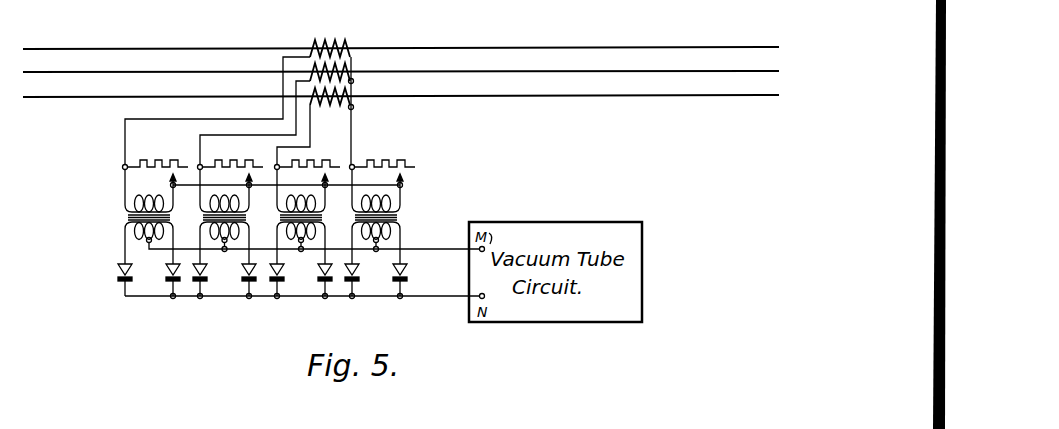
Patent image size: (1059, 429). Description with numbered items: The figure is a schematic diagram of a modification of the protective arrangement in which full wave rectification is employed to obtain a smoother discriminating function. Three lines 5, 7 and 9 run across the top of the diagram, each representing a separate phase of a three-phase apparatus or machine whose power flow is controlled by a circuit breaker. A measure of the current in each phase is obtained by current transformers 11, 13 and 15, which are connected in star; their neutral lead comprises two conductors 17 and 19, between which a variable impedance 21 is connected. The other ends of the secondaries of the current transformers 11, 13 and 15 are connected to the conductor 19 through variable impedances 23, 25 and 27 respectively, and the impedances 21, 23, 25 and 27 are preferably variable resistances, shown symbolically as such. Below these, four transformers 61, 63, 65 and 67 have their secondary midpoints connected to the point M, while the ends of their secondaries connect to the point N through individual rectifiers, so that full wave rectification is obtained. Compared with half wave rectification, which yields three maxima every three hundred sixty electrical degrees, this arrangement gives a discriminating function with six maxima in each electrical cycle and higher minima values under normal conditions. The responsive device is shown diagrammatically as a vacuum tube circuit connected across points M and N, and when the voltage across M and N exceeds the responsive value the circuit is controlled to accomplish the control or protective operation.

The line 5 is at (555, 29).
The line 7 is at (558, 55).
The line 9 is at (558, 82).
The current transformer 11 is at (352, 46).
The current transformer 13 is at (353, 72).
The current transformer 15 is at (353, 99).
The conductor 17 is at (353, 140).
The conductor 19 is at (287, 197).
The variable impedance 21 is at (389, 147).
The variable impedance 23 is at (180, 160).
The variable impedance 25 is at (252, 160).
The variable impedance 27 is at (308, 162).
The transformer 61 is at (355, 217).
The transformer 63 is at (127, 218).
The transformer 65 is at (205, 217).
The transformer 67 is at (279, 217).